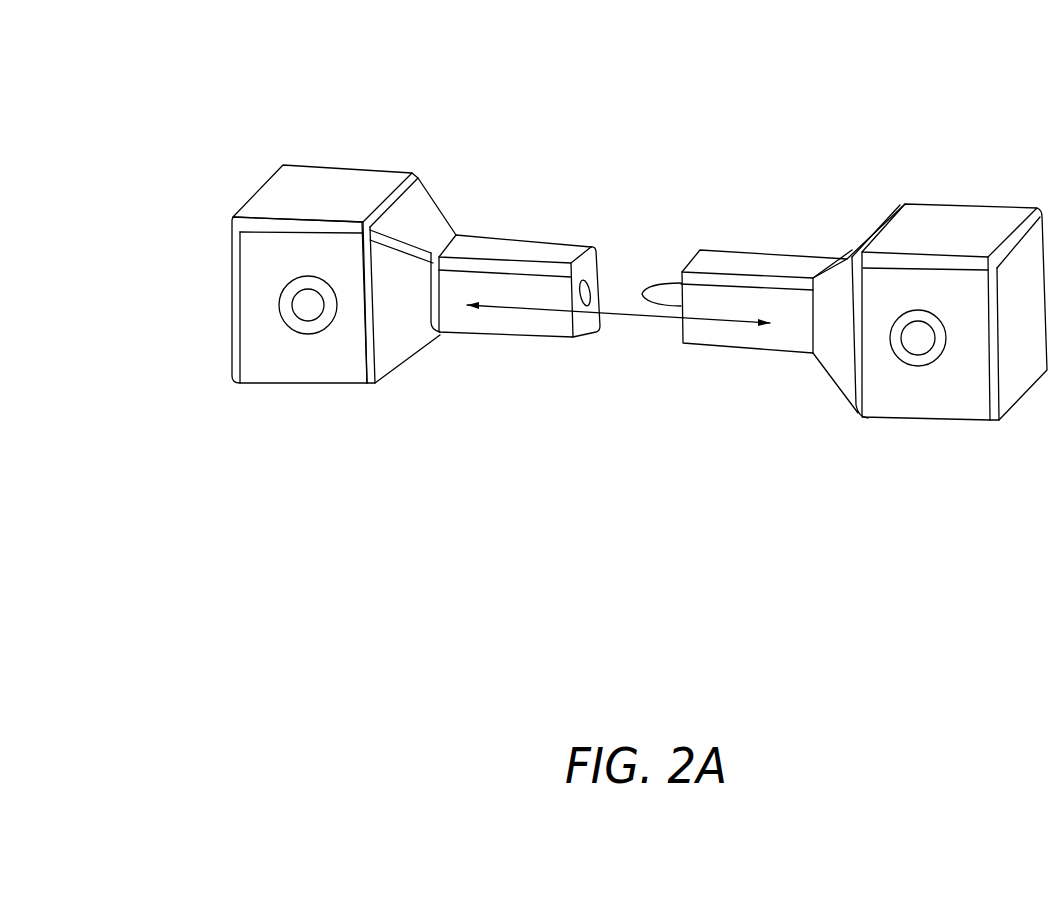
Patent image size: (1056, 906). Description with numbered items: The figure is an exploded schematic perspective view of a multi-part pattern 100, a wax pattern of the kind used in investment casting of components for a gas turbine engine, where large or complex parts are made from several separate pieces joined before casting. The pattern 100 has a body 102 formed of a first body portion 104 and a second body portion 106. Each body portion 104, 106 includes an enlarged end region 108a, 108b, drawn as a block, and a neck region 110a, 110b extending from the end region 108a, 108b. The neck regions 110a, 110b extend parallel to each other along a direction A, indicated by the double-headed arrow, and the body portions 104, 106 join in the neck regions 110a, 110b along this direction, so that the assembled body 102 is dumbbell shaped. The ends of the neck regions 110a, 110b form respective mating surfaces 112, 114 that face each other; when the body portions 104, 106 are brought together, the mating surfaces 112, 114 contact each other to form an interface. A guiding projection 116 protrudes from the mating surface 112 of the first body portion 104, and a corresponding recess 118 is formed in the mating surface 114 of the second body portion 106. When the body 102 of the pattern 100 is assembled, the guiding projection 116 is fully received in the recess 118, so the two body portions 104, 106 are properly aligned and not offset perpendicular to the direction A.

The multi-part pattern 100 is at (250, 58).
The body 102 is at (650, 216).
The first body portion 104 is at (933, 403).
The second body portion 106 is at (482, 243).
The enlarged end region 108a is at (973, 217).
The enlarged end region 108b is at (333, 183).
The neck region 110a is at (757, 260).
The neck region 110b is at (550, 260).
The mating surface 112 is at (663, 327).
The mating surface 114 is at (580, 320).
The guiding projection 116 is at (664, 283).
The recess 118 is at (585, 283).
The direction A is at (525, 307).